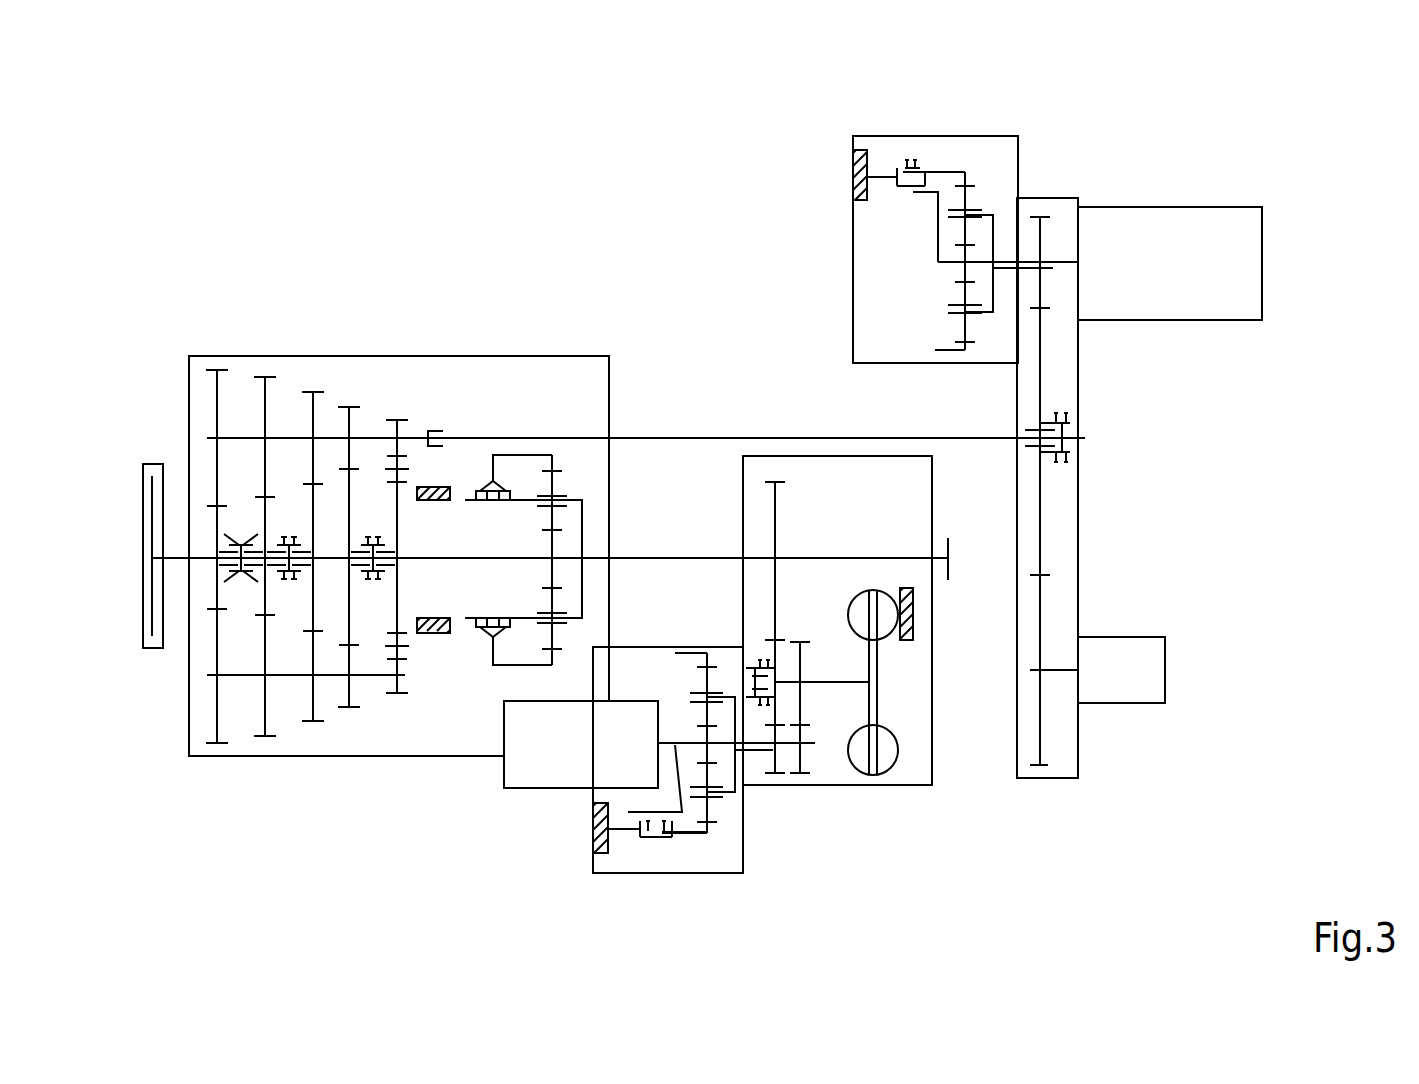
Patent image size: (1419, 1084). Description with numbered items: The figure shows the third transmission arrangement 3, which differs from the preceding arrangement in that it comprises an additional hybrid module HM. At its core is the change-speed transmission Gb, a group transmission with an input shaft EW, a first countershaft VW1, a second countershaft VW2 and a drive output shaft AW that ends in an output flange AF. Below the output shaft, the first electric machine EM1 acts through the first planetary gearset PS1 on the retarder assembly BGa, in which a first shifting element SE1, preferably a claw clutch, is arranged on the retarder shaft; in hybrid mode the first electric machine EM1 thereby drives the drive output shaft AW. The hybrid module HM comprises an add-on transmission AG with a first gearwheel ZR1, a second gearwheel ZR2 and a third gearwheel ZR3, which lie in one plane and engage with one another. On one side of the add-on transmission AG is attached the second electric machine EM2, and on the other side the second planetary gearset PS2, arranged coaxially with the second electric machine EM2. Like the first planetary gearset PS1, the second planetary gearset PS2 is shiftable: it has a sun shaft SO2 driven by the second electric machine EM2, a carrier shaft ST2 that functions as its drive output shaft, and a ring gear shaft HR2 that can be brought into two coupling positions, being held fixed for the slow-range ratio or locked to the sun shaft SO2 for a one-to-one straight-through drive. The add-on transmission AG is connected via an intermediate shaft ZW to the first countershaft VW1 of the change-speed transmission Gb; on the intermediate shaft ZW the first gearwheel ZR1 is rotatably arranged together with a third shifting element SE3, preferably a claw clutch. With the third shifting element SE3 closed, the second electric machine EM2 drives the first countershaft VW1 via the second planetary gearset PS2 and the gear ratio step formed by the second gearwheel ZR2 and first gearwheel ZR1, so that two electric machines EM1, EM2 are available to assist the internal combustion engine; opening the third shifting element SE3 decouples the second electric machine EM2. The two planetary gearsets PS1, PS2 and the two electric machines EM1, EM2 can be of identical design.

The input shaft EW is at (176, 556).
The change-speed transmission Gb is at (358, 348).
The first countershaft VW1 is at (370, 438).
The second countershaft VW2 is at (328, 677).
The third transmission arrangement 3 is at (590, 230).
The drive output shaft AW is at (640, 553).
The intermediate shaft ZW is at (708, 437).
The second planetary gearset PS2 is at (905, 253).
The ring gear shaft HR2 is at (943, 170).
The carrier shaft ST2 is at (987, 215).
The sun shaft SO2 is at (1060, 262).
The second electric machine EM2 is at (1168, 200).
The second gearwheel ZR2 is at (1045, 290).
The first gearwheel ZR1 is at (1040, 380).
The third gearwheel ZR3 is at (1040, 735).
The third shifting element SE3 is at (1062, 468).
The output flange AF is at (950, 549).
The add-on transmission AG is at (1083, 603).
The first electric machine EM1 is at (530, 791).
The first planetary gearset PS1 is at (682, 875).
The first shifting element SE1 is at (755, 708).
The retarder assembly BGa is at (856, 790).
The hybrid module HM is at (1100, 775).